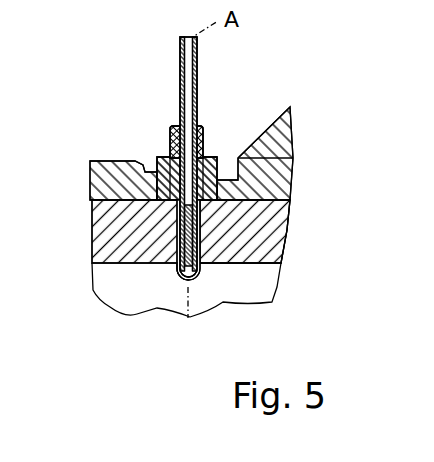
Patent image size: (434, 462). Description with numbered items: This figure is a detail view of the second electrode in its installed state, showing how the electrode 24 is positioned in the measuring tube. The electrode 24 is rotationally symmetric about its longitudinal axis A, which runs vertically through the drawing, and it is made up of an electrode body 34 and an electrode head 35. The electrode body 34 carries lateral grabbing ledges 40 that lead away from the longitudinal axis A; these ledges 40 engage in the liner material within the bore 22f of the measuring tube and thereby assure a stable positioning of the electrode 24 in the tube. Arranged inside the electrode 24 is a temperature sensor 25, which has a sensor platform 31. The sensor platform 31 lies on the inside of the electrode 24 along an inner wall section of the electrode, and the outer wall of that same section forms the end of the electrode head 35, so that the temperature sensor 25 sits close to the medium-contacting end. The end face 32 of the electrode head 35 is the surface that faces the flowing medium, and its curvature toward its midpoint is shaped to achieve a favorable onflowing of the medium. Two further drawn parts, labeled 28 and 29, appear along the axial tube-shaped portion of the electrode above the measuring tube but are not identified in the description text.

The bore 22f is at (160, 222).
The electrode 24 is at (200, 143).
The temperature sensor 25 is at (161, 158).
The inner tube 28 is at (193, 75).
The outer tube 29 is at (180, 69).
The sensor platform 31 is at (199, 270).
The end face 32 is at (187, 287).
The electrode body 34 is at (293, 159).
The electrode head 35 is at (178, 272).
The lateral grabbing ledges 40 is at (270, 235).